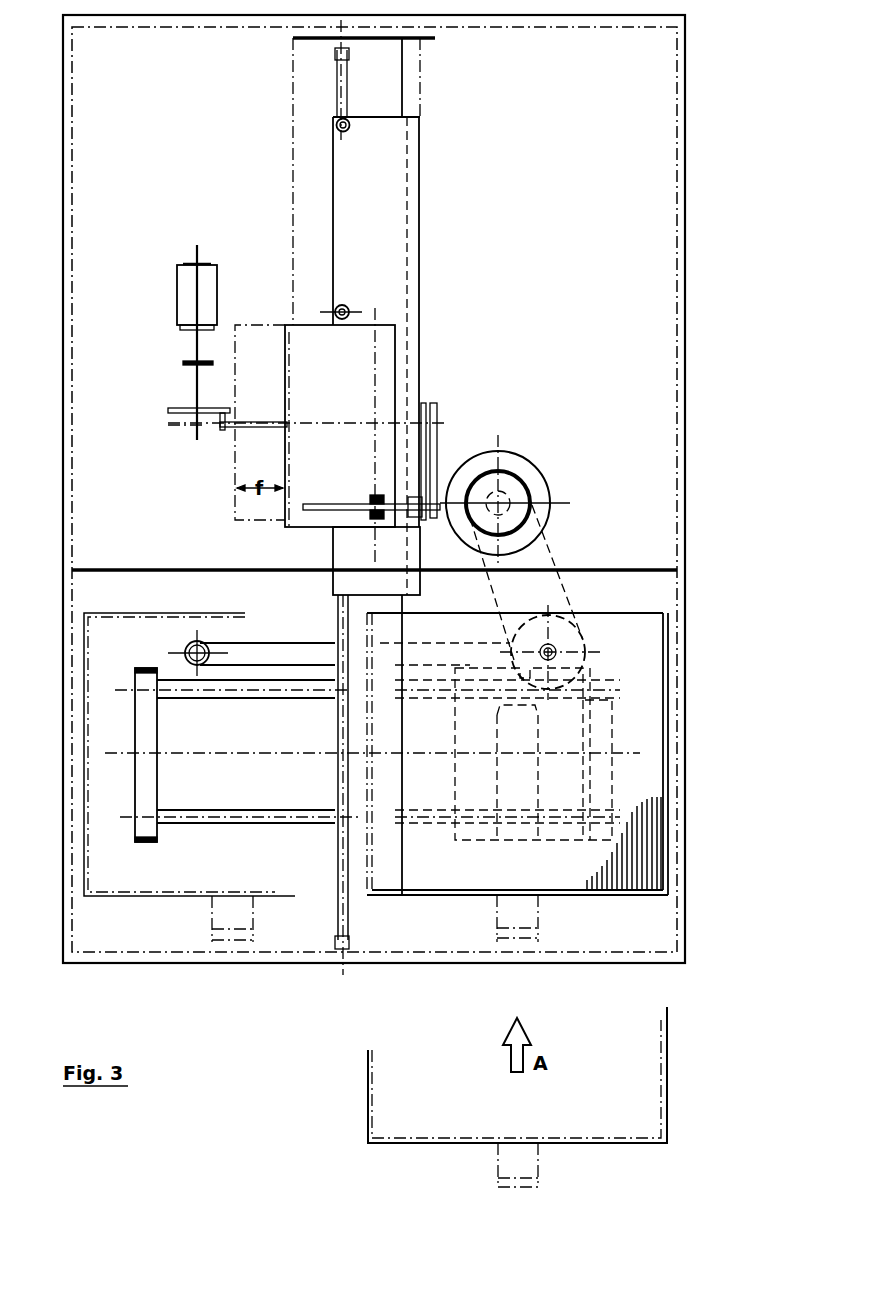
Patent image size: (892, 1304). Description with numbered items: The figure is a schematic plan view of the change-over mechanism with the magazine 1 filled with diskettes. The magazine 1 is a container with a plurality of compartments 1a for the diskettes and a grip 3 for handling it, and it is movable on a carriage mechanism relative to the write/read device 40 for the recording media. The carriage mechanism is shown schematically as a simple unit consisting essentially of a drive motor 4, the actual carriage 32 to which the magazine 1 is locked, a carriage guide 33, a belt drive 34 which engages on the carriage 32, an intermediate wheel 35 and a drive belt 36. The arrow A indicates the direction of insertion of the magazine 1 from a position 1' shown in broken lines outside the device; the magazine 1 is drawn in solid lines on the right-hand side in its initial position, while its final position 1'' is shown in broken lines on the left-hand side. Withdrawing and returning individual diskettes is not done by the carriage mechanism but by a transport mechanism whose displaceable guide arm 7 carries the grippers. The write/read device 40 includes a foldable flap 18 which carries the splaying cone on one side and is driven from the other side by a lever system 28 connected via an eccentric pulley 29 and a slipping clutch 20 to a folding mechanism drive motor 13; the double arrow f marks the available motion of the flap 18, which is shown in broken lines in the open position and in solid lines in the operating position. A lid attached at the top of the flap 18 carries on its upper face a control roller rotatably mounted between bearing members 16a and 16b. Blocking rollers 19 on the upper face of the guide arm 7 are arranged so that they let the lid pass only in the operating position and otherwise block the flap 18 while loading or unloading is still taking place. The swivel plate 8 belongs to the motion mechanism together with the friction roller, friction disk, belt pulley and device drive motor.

The magazine 1 is at (544, 754).
The compartments 1a is at (640, 860).
The position outside the device 1' is at (496, 1097).
The final position 1'' is at (189, 777).
The grip 3 is at (530, 935).
The drive motor 4 is at (520, 490).
The guide arm 7 is at (375, 230).
The swivel plate 8 is at (438, 405).
The folding mechanism drive motor 13 is at (185, 290).
The bearing member 16a is at (370, 515).
The bearing member 16b is at (368, 495).
The flap 18 is at (283, 347).
The blocking rollers 19 is at (336, 125).
The slipping clutch 20 is at (177, 363).
The lever system 28 is at (245, 432).
The eccentric pulley 29 is at (165, 410).
The carriage 32 is at (567, 707).
The carriage guide 33 is at (216, 812).
The belt drive 34 is at (288, 655).
The intermediate wheel 35 is at (575, 637).
The drive belt 36 is at (535, 567).
The write/read device 40 is at (283, 305).